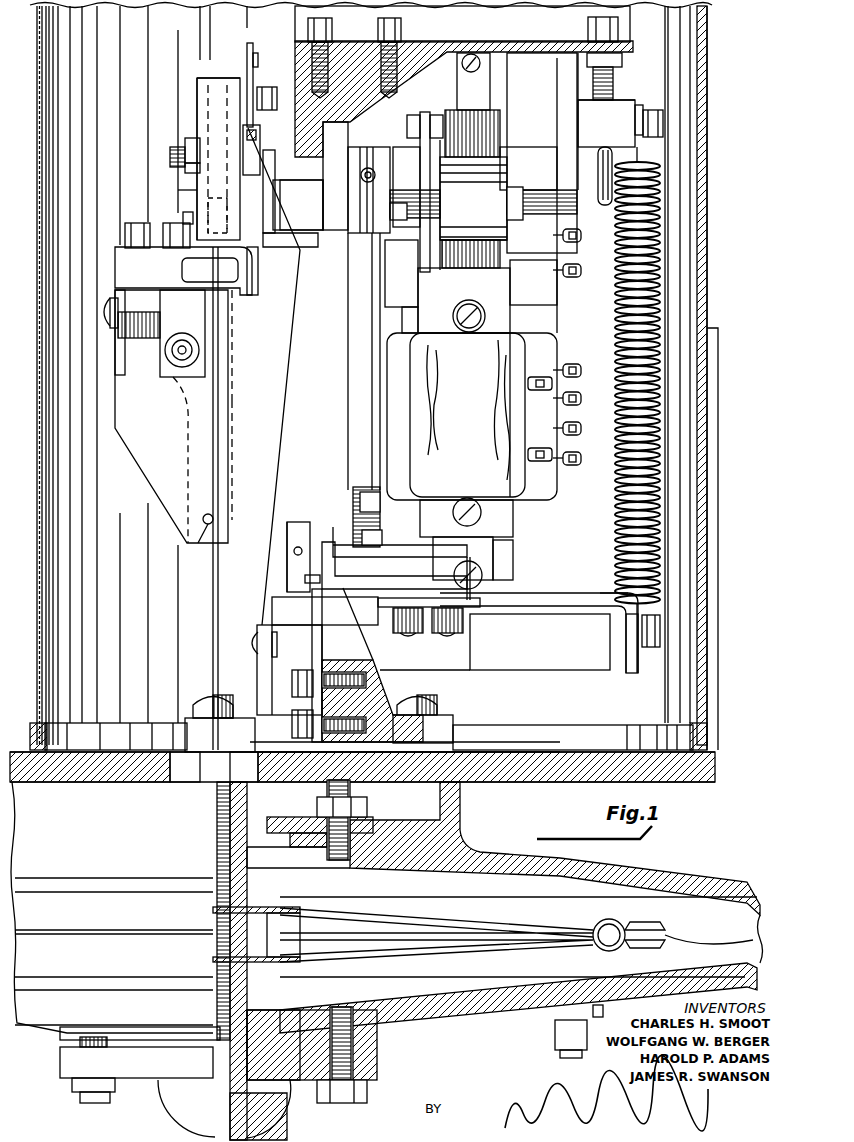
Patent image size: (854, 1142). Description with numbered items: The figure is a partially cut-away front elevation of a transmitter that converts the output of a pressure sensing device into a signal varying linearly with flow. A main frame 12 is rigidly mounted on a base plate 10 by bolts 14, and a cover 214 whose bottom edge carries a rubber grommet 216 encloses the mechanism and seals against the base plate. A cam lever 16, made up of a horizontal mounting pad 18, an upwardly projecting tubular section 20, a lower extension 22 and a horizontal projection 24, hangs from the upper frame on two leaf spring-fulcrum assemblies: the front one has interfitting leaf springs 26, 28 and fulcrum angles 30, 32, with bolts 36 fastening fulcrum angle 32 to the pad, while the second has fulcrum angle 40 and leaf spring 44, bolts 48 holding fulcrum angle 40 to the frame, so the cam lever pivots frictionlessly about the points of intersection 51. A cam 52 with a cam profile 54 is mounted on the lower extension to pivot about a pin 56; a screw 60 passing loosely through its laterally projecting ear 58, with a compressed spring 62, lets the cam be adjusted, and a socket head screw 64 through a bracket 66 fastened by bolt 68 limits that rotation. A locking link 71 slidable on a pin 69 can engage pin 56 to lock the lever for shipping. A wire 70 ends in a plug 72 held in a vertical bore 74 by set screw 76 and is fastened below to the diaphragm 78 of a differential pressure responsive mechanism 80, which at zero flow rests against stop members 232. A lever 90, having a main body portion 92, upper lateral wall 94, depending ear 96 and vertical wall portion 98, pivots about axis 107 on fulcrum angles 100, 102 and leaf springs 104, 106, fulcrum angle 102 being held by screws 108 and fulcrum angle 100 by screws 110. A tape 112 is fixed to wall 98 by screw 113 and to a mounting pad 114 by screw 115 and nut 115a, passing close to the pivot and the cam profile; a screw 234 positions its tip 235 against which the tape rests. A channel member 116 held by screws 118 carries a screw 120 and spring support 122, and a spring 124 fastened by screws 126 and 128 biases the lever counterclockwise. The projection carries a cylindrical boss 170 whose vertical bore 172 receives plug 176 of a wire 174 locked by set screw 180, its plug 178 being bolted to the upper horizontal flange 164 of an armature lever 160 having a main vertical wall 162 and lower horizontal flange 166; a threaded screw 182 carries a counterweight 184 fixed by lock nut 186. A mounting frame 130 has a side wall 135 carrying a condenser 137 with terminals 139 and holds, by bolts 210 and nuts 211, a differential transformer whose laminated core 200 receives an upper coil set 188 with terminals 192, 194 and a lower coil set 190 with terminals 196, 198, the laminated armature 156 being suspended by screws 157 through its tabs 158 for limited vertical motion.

The base plate 10 is at (546, 763).
The main frame 12 is at (304, 405).
The bolts 14 is at (203, 696).
The cam lever 16 is at (197, 69).
The horizontal mounting pad 18 is at (115, 274).
The tubular section 20 is at (177, 187).
The lower extension 22 is at (190, 432).
The projection 24 is at (308, 222).
The leaf spring 26 is at (262, 205).
The leaf spring 28 is at (270, 256).
The fulcrum angle 30 is at (300, 246).
The fulcrum angle 32 is at (125, 242).
The bolts 36 is at (165, 225).
The fulcrum angle 40 is at (280, 206).
The leaf spring 44 is at (436, 705).
The bolts 48 is at (324, 110).
The points of intersection 51 is at (226, 220).
The cam 52 is at (145, 452).
The cam profile 54 is at (243, 514).
The pin 56 is at (198, 546).
The laterally projecting ear 58 is at (117, 355).
The screw 60 is at (108, 310).
The spring 62 is at (145, 345).
The socket head screw 64 is at (175, 366).
The bracket 66 is at (201, 376).
The bolt 68 is at (188, 283).
The pin 69 is at (298, 535).
The wire 70 is at (220, 617).
The locking link 71 is at (286, 576).
The plug 72 is at (220, 213).
The vertical bore 74 is at (217, 83).
The set screw 76 is at (183, 222).
The diaphragm 78 is at (383, 912).
The differential pressure responsive mechanism 80 is at (706, 880).
The lever 90 is at (578, 597).
The main body portion 92 is at (584, 670).
The upper lateral wall 94 is at (551, 596).
The depending ear 96 is at (638, 667).
The vertical wall portion 98 is at (289, 670).
The fulcrum angle 100 is at (327, 543).
The fulcrum angle 102 is at (322, 648).
The leaf spring 104 is at (376, 611).
The leaf spring 106 is at (298, 556).
The axis 107 is at (306, 580).
The screws 108 is at (292, 722).
The screws 110 is at (415, 634).
The tape 112 is at (265, 466).
The screw 113 is at (254, 642).
The mounting pad 114 is at (247, 65).
The screw 115 is at (195, 100).
The nut 115a is at (267, 88).
The channel member 116 is at (633, 36).
The screws 118 is at (332, 38).
The screw 120 is at (613, 92).
The spring support 122 is at (633, 102).
The spring 124 is at (655, 170).
The screw 126 is at (664, 120).
The screw 128 is at (657, 623).
The mounting frame 130 is at (430, 505).
The side wall 135 is at (510, 278).
The condenser 137 is at (458, 383).
The terminals 139 is at (545, 392).
The armature 156 is at (498, 526).
The screws 157 is at (478, 622).
The tabs 158 is at (462, 78).
The armature lever 160 is at (495, 562).
The main vertical wall 162 is at (385, 556).
The upper horizontal flange 164 is at (360, 512).
The lower horizontal flange 166 is at (420, 557).
The cylindrical boss 170 is at (375, 150).
The vertical bore 172 is at (366, 168).
The wire 174 is at (372, 310).
The plug 176 is at (334, 176).
The plug 178 is at (356, 492).
The set screw 180 is at (420, 168).
The threaded screw 182 is at (546, 187).
The counterweight 184 is at (490, 262).
The lock nut 186 is at (515, 175).
The upper coil set 188 is at (560, 288).
The lower coil set 190 is at (420, 243).
The terminals 192 is at (595, 150).
The terminals 194 is at (583, 272).
The terminals 196 is at (584, 390).
The terminals 198 is at (584, 448).
The core 200 is at (500, 262).
The bolts 210 is at (500, 122).
The nuts 211 is at (425, 114).
The cover 214 is at (708, 63).
The rubber grommet 216 is at (96, 730).
The stop members 232 is at (253, 876).
The screw 234 is at (186, 145).
The tip 235 is at (260, 157).